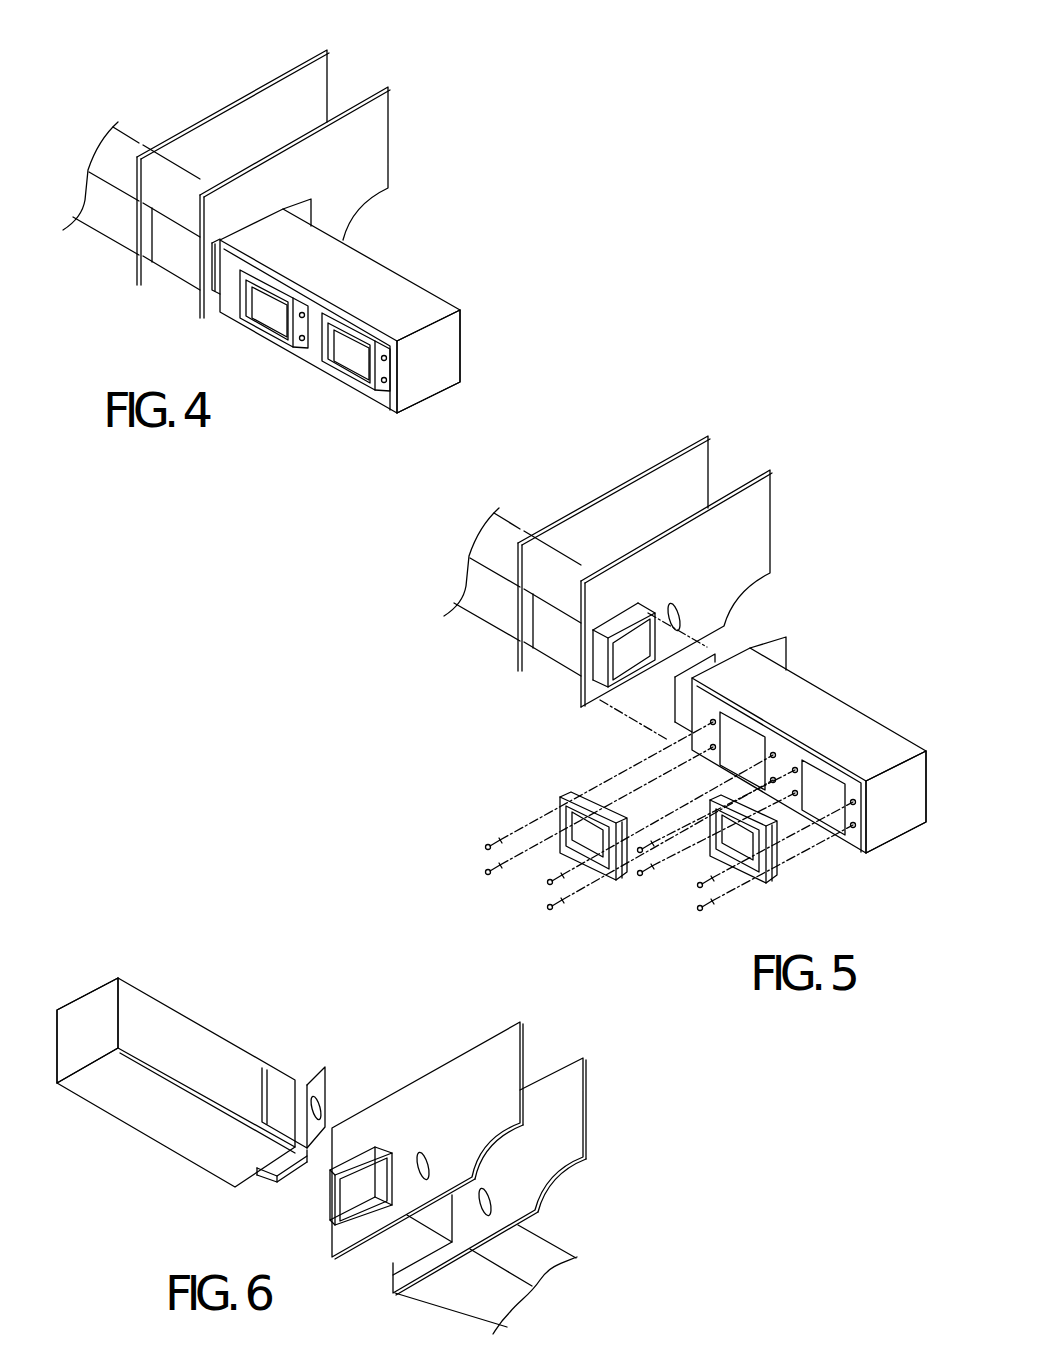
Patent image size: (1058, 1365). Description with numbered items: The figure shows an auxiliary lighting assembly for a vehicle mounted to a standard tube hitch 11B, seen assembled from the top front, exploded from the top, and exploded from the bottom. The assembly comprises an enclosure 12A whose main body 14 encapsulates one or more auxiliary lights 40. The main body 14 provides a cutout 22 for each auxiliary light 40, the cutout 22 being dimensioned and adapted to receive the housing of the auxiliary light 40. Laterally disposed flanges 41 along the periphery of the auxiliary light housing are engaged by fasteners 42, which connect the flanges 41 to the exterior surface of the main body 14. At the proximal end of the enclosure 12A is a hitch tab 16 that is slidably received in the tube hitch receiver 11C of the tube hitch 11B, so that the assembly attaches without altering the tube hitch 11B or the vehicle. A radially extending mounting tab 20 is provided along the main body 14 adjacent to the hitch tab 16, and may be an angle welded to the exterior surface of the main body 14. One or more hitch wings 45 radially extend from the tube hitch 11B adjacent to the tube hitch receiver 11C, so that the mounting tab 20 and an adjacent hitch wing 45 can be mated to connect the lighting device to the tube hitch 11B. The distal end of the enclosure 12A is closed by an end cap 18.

In FIG. 4, the tube hitch 11B is at (128, 137).
In FIG. 5, the tube hitch 11B is at (509, 523).
In FIG. 6, the tube hitch 11B is at (557, 1237).
In FIG. 5, the tube hitch receiver 11C is at (617, 708).
In FIG. 6, the tube hitch receiver 11C is at (363, 1173).
In FIG. 4, the enclosure 12A is at (394, 304).
In FIG. 5, the enclosure 12A is at (776, 728).
In FIG. 6, the enclosure 12A is at (185, 1066).
In FIG. 4, the main body 14 is at (423, 307).
In FIG. 5, the main body 14 is at (873, 742).
In FIG. 6, the main body 14 is at (157, 1023).
In FIG. 5, the hitch tab 16 is at (673, 700).
In FIG. 6, the hitch tab 16 is at (277, 1177).
In FIG. 4, the end cap 18 is at (445, 345).
In FIG. 5, the end cap 18 is at (905, 822).
In FIG. 6, the end cap 18 is at (82, 1017).
In FIG. 4, the mounting tab 20 is at (318, 210).
In FIG. 5, the mounting tab 20 is at (792, 650).
In FIG. 6, the mounting tab 20 is at (315, 1082).
In FIG. 4, the cutout 22 is at (307, 329).
In FIG. 5, the cutout 22 is at (814, 818).
In FIG. 4, the auxiliary light 40 is at (271, 317).
In FIG. 5, the auxiliary light 40 is at (567, 855).
In FIG. 5, the flange 41 is at (560, 796).
In FIG. 4, the fastener 42 is at (370, 398).
In FIG. 5, the fastener 42 is at (558, 909).
In FIG. 4, the hitch wing 45 is at (313, 73).
In FIG. 5, the hitch wing 45 is at (698, 467).